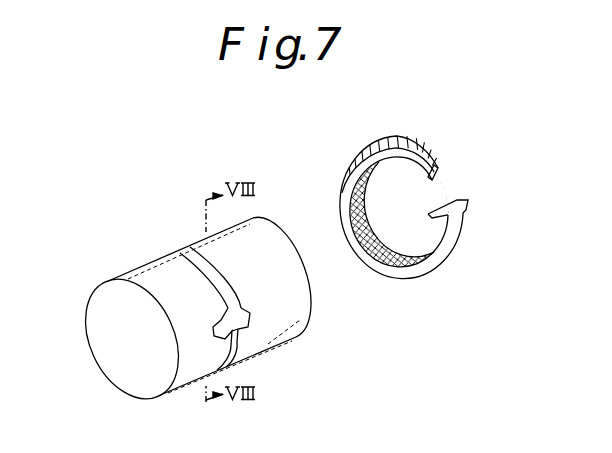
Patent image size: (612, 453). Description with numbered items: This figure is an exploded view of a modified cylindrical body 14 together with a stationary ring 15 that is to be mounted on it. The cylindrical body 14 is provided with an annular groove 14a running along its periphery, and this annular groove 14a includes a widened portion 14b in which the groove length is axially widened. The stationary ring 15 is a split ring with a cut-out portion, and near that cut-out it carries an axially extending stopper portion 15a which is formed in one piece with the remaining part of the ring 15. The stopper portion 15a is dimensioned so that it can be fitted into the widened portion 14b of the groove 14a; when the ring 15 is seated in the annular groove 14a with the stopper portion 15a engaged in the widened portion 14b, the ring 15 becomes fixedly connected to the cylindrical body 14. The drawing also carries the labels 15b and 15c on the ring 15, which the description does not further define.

The cylindrical body 14 is at (147, 264).
The annular groove 14a is at (189, 258).
The widened portion 14b is at (270, 340).
The stationary ring 15 is at (403, 283).
The stopper portion 15a is at (467, 201).
The inner lining of ring 15b is at (373, 238).
The end portion of ring 15c is at (433, 154).